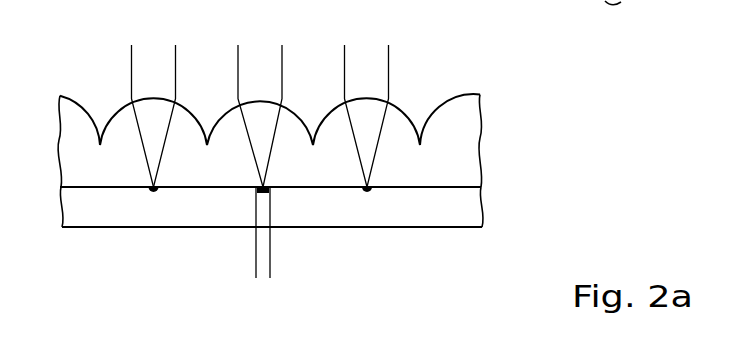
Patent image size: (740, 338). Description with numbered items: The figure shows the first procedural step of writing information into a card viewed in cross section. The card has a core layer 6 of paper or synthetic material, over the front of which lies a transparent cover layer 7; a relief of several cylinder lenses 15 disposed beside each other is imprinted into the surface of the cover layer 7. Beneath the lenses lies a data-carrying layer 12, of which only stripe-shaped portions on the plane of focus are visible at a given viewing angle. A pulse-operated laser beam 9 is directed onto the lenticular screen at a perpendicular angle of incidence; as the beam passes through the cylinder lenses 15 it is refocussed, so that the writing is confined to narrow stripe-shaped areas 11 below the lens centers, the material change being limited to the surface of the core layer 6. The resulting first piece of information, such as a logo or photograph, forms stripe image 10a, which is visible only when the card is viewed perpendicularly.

The core layer 6 is at (464, 212).
The transparent cover layer 7 is at (467, 141).
The laser beam 9 is at (371, 68).
The stripe image 10a is at (267, 193).
The stripe-shaped areas 11 is at (259, 285).
The data-carrying layer 12 is at (458, 187).
The cylinder lenses 15 is at (406, 111).